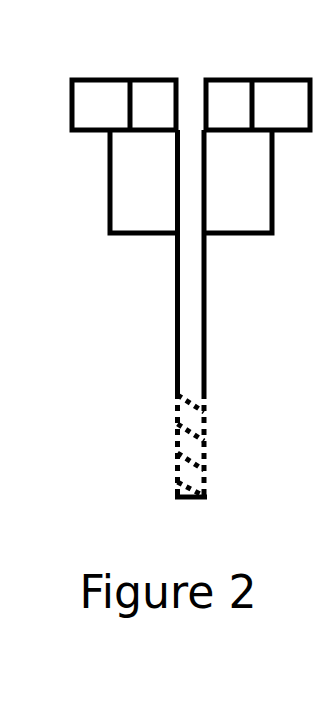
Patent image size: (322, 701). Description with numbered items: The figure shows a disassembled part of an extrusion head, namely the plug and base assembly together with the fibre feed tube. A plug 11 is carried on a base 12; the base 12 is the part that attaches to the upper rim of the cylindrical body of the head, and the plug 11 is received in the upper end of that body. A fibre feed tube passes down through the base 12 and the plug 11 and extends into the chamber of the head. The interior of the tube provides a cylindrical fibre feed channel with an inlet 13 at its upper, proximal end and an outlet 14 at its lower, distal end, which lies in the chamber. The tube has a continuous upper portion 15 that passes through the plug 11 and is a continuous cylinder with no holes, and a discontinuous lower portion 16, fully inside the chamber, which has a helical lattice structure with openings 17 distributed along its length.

The plug 11 is at (132, 183).
The base 12 is at (93, 98).
The inlet 13 is at (192, 103).
The outlet 14 is at (188, 499).
The upper (proximal) portion 15 is at (175, 222).
The lower (distal) portion 16 is at (177, 435).
The openings 17 is at (190, 415).